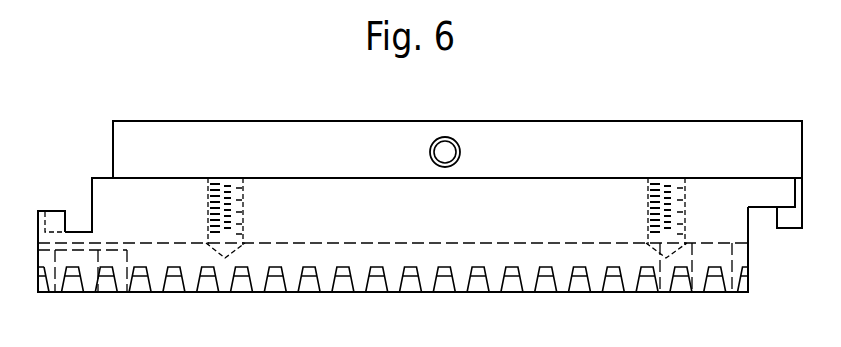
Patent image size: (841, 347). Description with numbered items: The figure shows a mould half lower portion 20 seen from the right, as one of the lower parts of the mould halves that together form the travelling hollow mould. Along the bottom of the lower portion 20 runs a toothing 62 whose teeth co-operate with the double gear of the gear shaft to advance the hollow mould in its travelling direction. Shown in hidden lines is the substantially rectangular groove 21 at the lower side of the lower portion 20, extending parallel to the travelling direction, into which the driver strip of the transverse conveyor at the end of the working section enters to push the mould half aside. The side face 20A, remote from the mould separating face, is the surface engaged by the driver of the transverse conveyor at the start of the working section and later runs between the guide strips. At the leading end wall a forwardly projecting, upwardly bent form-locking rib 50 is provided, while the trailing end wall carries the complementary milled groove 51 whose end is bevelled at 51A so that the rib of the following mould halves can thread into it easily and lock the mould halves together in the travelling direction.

The mould half lower portion 20 is at (543, 178).
The rear side of mould lower portion 20A is at (350, 197).
The groove 21 is at (352, 244).
The rib 50 is at (76, 224).
The groove 51 is at (762, 220).
The bevel of groove 51A is at (787, 218).
The toothing 62 is at (493, 281).